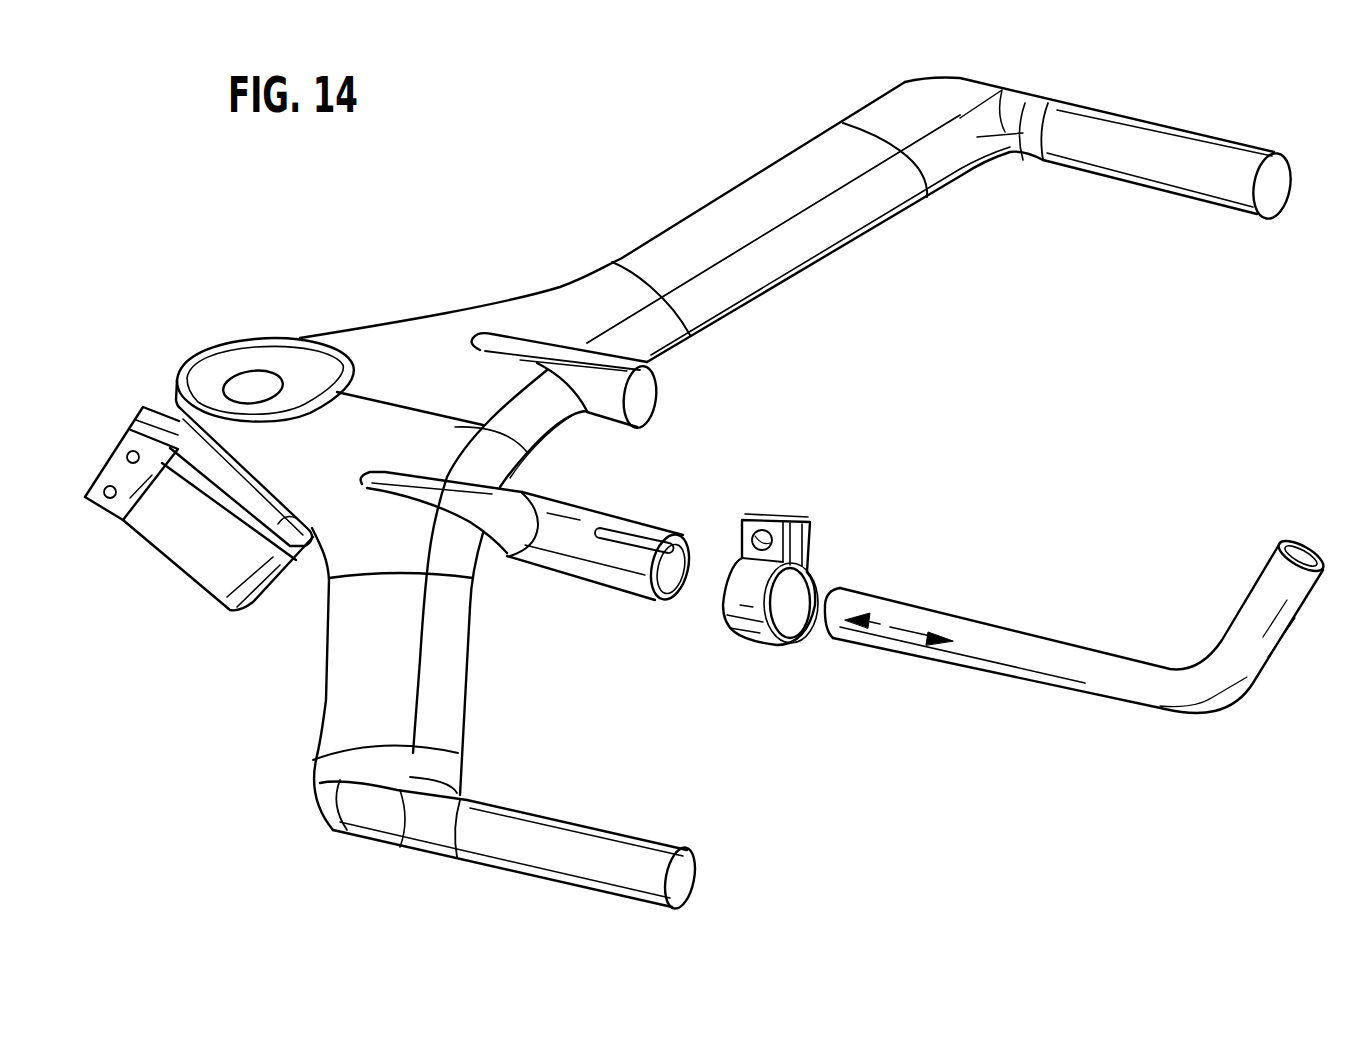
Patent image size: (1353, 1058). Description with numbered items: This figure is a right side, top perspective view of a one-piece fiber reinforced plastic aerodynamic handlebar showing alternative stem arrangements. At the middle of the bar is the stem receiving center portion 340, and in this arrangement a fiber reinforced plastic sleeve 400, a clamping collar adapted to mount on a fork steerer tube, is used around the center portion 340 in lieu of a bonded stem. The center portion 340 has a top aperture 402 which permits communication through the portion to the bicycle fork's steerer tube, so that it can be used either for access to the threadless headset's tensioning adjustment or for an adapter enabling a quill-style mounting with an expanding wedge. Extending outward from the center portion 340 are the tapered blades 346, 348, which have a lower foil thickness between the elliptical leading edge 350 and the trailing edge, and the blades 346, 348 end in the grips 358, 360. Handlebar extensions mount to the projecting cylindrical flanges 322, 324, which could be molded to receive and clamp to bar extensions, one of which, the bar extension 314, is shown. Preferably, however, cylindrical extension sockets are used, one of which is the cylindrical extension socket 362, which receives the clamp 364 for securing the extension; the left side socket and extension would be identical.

The bar extension 314 is at (1135, 702).
The projecting cylindrical flange 322 is at (542, 555).
The projecting cylindrical flange 324 is at (648, 389).
The stem receiving center portion 340 is at (430, 338).
The tapered blade 346 is at (348, 714).
The tapered blade 348 is at (733, 207).
The elliptical leading edge 350 is at (333, 570).
The grip 358 is at (617, 837).
The grip 360 is at (1163, 133).
The cylindrical extension socket 362 is at (623, 516).
The clamp 364 is at (763, 640).
The fiber reinforced plastic sleeve 400 is at (167, 583).
The top aperture 402 is at (247, 373).